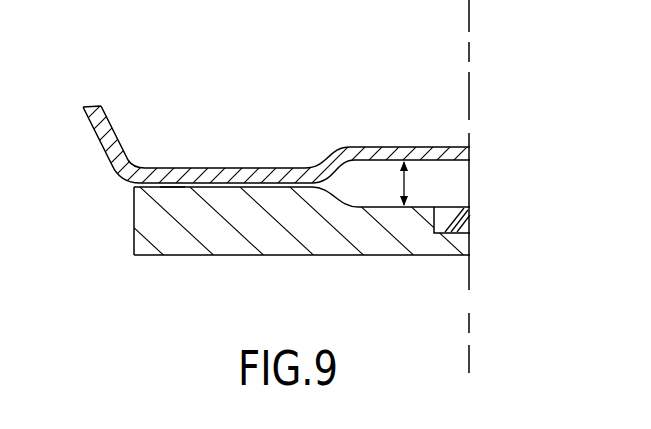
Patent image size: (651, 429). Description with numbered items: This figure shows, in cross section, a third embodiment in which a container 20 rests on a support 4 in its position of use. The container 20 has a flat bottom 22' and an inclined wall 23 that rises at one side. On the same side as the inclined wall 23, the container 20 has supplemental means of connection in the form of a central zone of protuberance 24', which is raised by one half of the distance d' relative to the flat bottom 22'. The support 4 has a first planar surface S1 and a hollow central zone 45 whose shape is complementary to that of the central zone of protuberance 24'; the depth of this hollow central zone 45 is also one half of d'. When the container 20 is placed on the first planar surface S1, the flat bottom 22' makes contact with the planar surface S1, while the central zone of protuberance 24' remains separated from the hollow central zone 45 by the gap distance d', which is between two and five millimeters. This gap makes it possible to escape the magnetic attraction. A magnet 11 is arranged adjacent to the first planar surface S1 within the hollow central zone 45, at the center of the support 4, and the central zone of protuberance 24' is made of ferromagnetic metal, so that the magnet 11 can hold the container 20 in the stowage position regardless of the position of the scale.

The container 20 is at (86, 100).
The inclined wall 23 is at (96, 137).
The flat bottom 22' is at (226, 138).
The central zone of protuberance 24' is at (387, 130).
The support 4 is at (230, 256).
The hollow central zone 45 is at (470, 202).
The magnet 11 is at (460, 222).
The first planar surface S1 is at (171, 191).
The gap distance d' is at (418, 183).